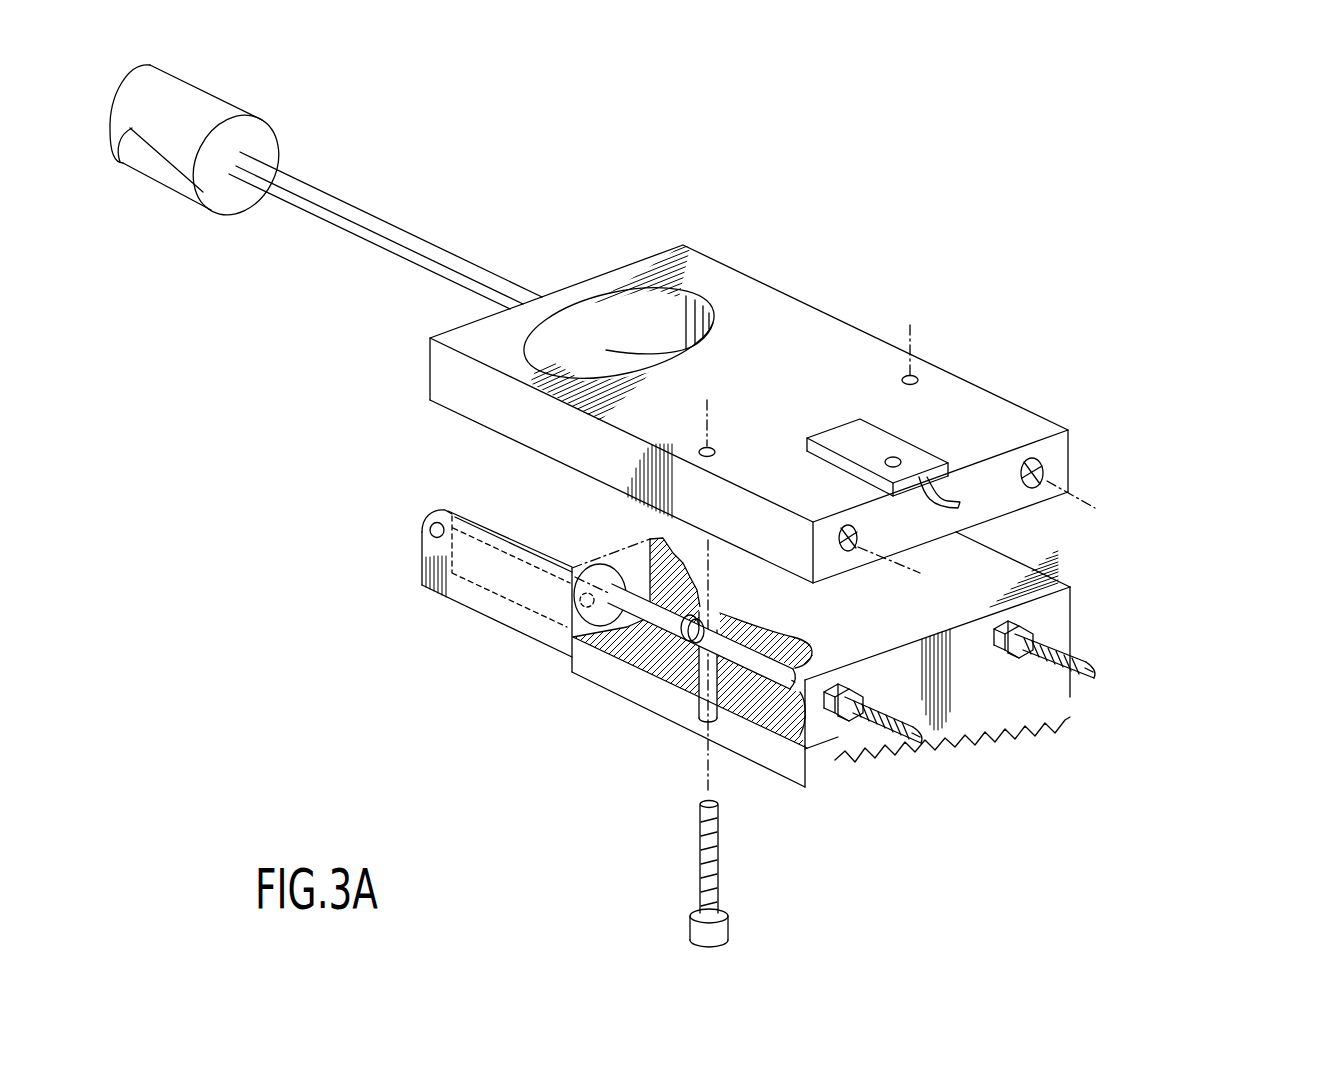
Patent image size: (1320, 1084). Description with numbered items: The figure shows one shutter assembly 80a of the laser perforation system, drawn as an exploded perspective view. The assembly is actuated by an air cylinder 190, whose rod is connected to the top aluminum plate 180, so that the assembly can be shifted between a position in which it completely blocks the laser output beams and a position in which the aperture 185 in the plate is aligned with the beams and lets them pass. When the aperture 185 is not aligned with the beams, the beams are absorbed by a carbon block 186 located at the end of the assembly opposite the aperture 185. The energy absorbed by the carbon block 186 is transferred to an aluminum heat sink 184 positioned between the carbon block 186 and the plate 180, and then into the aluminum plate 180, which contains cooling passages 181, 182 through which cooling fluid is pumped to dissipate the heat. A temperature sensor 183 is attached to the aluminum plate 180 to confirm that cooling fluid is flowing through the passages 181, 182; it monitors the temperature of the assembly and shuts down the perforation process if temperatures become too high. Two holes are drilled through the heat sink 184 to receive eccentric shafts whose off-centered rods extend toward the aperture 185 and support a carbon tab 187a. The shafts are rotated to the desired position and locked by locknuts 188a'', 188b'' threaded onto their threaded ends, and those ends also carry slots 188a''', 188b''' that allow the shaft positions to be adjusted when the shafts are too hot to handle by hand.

The shutter assembly 80a is at (1170, 786).
The aluminum plate 180 is at (787, 327).
The cooling passage 181 is at (1060, 467).
The cooling passage 182 is at (855, 547).
The temperature sensor 183 is at (913, 458).
The aluminum heat sink 184 is at (977, 670).
The aperture 185 is at (586, 313).
The carbon block 186 is at (650, 692).
The carbon tab 187a is at (498, 605).
The locknut 188a'' is at (825, 783).
The slot 188a''' is at (941, 773).
The locknut 188b'' is at (1098, 605).
The slot 188b''' is at (1126, 648).
The air cylinder 190 is at (264, 133).